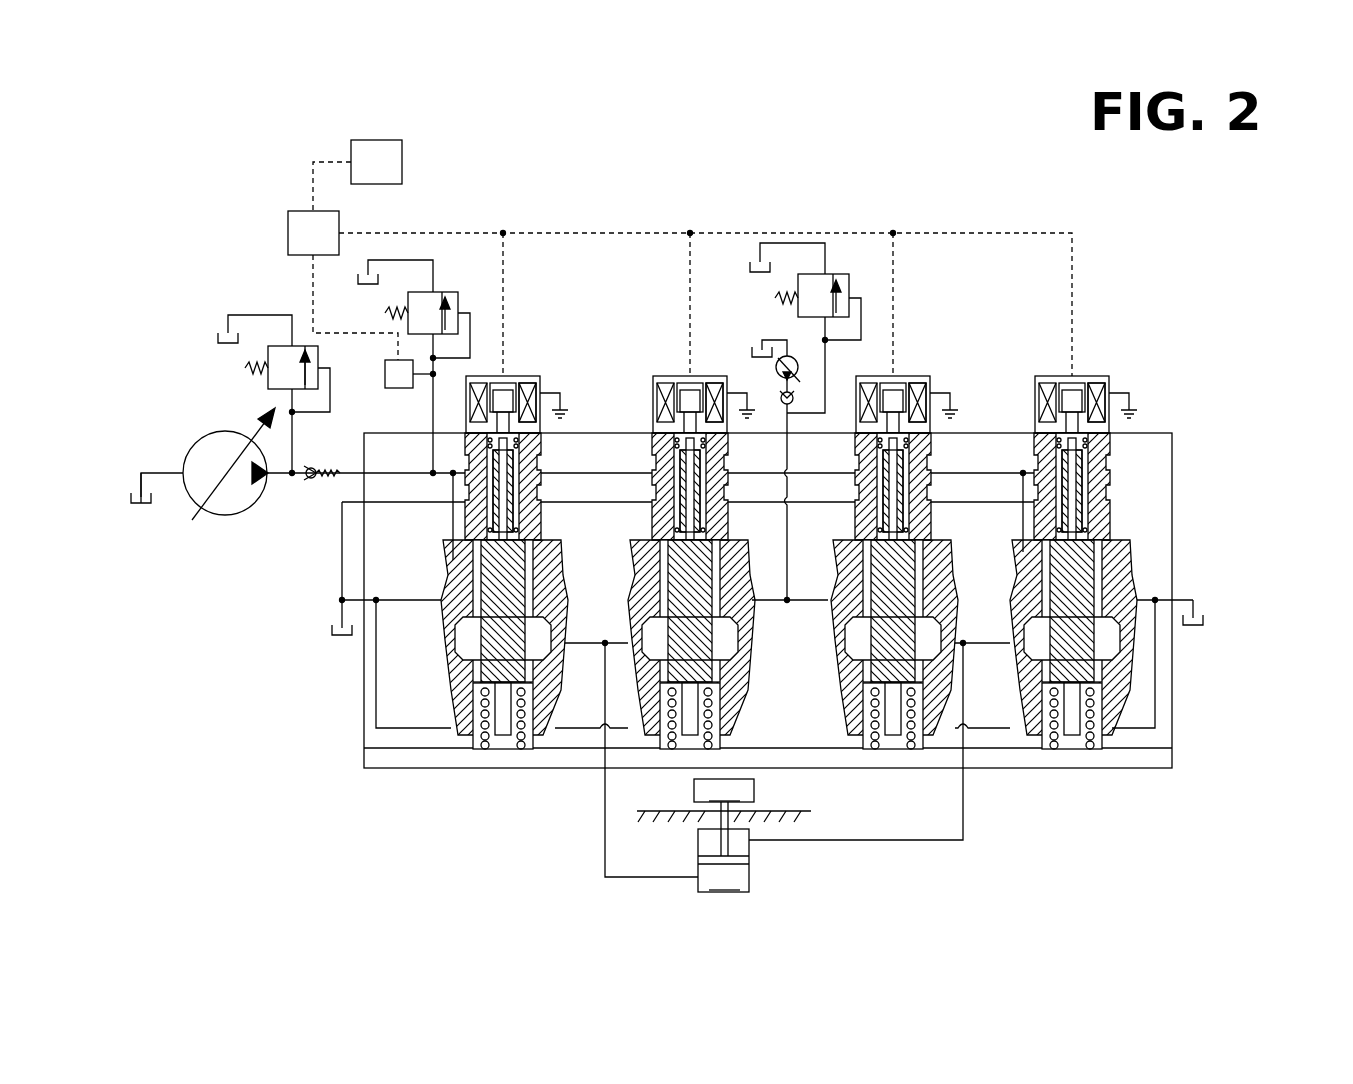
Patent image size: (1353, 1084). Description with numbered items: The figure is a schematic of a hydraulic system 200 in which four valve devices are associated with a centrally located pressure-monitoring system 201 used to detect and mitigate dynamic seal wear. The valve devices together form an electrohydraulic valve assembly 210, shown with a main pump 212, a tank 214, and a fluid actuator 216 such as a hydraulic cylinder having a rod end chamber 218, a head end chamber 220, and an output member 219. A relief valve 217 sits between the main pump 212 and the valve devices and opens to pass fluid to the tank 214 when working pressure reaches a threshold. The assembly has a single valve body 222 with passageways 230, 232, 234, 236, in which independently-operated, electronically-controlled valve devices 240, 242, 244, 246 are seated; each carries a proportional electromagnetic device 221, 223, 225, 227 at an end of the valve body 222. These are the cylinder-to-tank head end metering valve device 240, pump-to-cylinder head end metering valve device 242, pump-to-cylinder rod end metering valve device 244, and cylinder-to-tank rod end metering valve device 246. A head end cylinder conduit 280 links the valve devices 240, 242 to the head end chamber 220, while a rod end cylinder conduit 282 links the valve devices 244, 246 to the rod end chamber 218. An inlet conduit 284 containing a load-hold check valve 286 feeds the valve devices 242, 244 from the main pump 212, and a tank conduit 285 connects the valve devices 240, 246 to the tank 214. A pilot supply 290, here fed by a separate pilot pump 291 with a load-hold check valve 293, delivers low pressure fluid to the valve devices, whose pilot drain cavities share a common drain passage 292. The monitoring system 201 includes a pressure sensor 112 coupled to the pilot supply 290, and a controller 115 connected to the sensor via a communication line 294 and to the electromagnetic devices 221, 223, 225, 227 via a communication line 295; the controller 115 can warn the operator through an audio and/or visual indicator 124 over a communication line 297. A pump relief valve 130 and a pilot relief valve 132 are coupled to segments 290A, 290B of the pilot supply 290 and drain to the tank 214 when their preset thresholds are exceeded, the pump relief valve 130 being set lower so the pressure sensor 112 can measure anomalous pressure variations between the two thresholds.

The hydraulic system 200 is at (763, 157).
The audio and/or visual indicator 124 is at (393, 173).
The controller 115 is at (330, 244).
The communication line 297 is at (320, 162).
The communication line 294 is at (313, 275).
The communication line 295 is at (572, 232).
The pressure sensor 112 is at (392, 388).
The pilot pump 291 is at (193, 445).
The segment of the pilot supply 290A is at (278, 478).
The pressure-monitoring system 201 is at (204, 575).
The load-hold check valve 293 is at (324, 480).
The pump relief valve 130 is at (266, 386).
The pilot relief valve 132 is at (450, 290).
The relief valve 217 is at (843, 275).
The main pump 212 is at (797, 360).
The load-hold check valve 286 is at (793, 398).
The inlet conduit 284 is at (790, 432).
The tank 214 is at (145, 520).
The pilot supply 290 is at (380, 473).
The segment of the pilot supply 290B is at (415, 478).
The common drain passage 292 is at (560, 502).
The valve body 222 is at (620, 434).
The tank conduit 285 is at (425, 600).
The head end cylinder conduit 280 is at (605, 815).
The rod end cylinder conduit 282 is at (968, 808).
The output member 219 is at (724, 800).
The rod end chamber 218 is at (747, 846).
The head end chamber 220 is at (724, 880).
The fluid actuator 216 is at (758, 896).
The cylinder-to-tank head end (CTHE) metering valve device 240 is at (492, 527).
The pump-to-cylinder head end (PCHE) metering valve device 242 is at (699, 527).
The pump-to-cylinder rod end (PCRE) metering valve device 244 is at (893, 527).
The cylinder-to-tank rod end (CTRE) metering valve device 246 is at (1093, 527).
The electrohydraulic valve assembly 210 is at (966, 367).
The proportional electromagnetic device 221 is at (533, 380).
The proportional electromagnetic device 223 is at (716, 404).
The proportional electromagnetic device 225 is at (928, 398).
The proportional electromagnetic device 227 is at (1105, 395).
The passageway 230 is at (490, 515).
The passageway 232 is at (700, 485).
The passageway 234 is at (884, 482).
The passageway 236 is at (1104, 458).